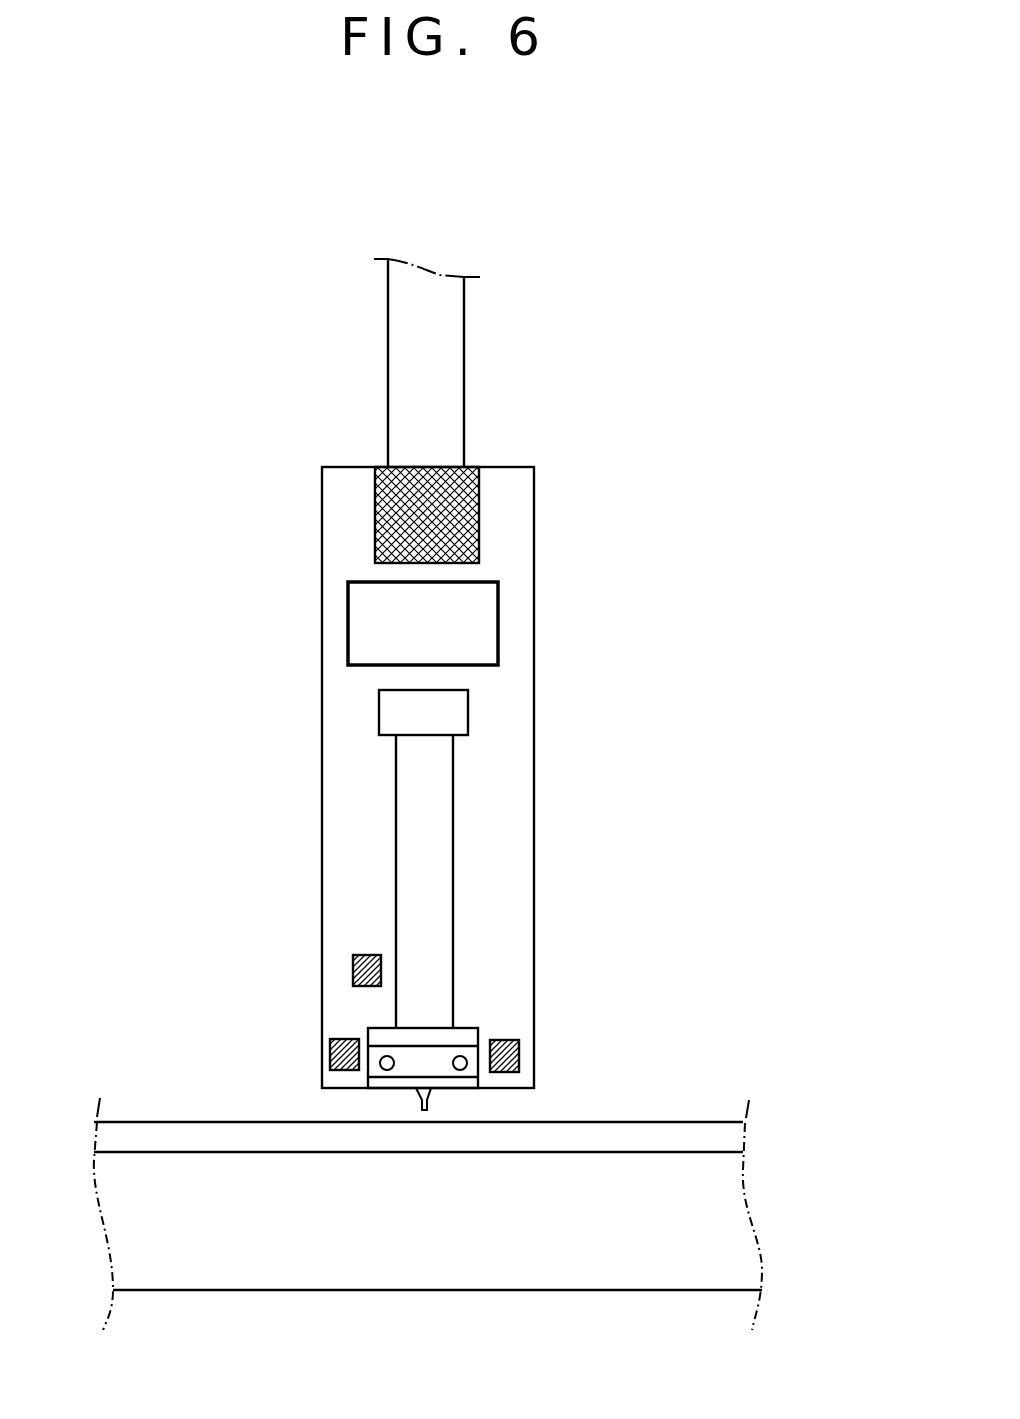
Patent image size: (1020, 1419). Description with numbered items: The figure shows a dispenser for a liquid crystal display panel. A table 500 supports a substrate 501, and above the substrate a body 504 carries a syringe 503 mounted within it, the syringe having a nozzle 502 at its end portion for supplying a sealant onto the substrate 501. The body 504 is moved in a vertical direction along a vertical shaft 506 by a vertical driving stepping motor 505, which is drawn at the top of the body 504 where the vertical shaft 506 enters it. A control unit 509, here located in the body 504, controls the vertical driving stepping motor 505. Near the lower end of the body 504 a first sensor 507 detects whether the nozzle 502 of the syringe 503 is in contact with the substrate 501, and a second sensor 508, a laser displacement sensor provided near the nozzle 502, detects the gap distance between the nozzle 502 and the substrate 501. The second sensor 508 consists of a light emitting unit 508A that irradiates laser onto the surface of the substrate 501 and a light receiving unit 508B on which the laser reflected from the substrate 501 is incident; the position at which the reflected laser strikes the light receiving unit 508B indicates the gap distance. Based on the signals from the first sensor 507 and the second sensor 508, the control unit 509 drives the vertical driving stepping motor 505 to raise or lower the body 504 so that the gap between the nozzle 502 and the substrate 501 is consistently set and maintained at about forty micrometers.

The table 500 is at (692, 1268).
The substrate 501 is at (695, 1138).
The nozzle 502 is at (418, 1097).
The syringe 503 is at (423, 793).
The body 504 is at (337, 623).
The vertical driving stepping motor 505 is at (375, 513).
The vertical shaft 506 is at (445, 373).
The first sensor 507 is at (353, 968).
The second sensor 508 is at (514, 1003).
The light emitting unit 508A is at (345, 1039).
The light receiving unit 508B is at (519, 1052).
The control unit 509 is at (498, 622).